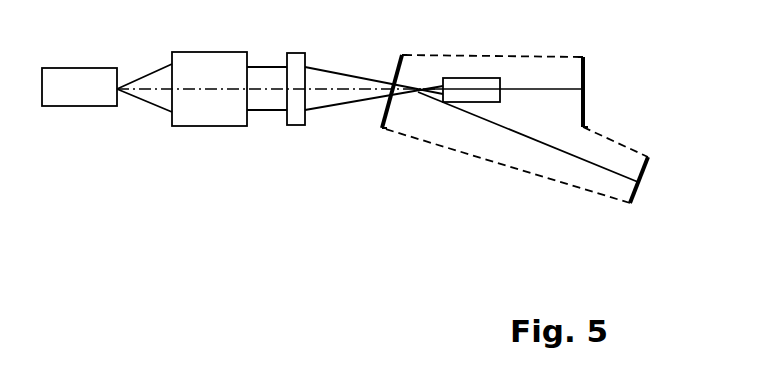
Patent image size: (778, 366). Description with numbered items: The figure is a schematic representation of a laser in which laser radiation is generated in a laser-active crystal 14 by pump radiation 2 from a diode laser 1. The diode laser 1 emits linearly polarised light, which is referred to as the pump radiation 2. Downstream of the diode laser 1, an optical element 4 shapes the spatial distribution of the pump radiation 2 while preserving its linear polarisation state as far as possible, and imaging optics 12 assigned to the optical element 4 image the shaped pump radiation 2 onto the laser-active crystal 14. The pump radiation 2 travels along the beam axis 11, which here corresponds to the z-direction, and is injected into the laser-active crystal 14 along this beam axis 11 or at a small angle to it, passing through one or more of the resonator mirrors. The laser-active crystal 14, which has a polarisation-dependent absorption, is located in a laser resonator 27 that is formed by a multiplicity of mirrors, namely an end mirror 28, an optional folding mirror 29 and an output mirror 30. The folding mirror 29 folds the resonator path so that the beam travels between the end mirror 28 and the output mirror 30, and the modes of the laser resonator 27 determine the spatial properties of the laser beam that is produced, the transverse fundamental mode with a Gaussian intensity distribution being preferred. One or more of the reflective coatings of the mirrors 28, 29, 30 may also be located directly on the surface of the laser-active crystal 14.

The diode laser 1 is at (62, 100).
The pump radiation 2 is at (142, 77).
The optical element 4 is at (190, 113).
The beam axis 11 is at (328, 87).
The imaging optics 12 is at (292, 115).
The laser-active crystal 14 is at (477, 78).
The laser resonator 27 is at (443, 148).
The end mirror 28 is at (633, 43).
The folding mirror 29 is at (377, 115).
The output mirror 30 is at (630, 203).